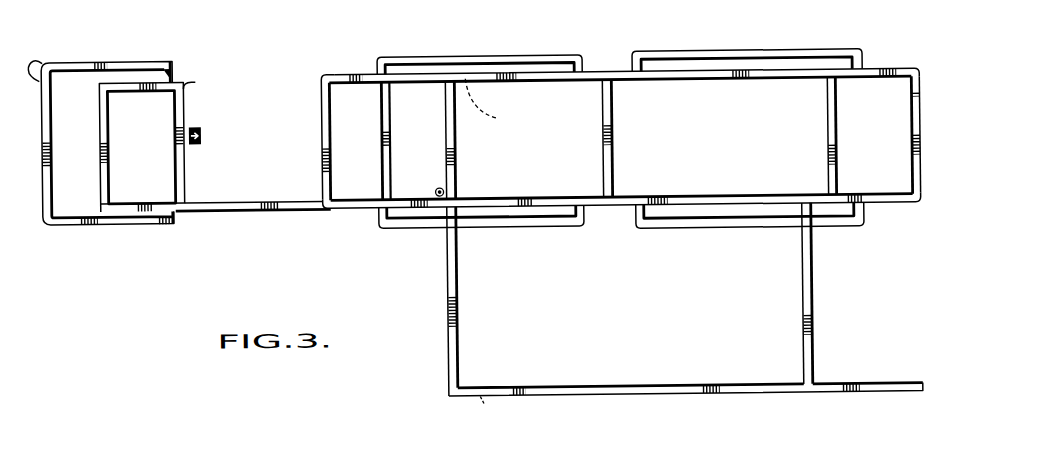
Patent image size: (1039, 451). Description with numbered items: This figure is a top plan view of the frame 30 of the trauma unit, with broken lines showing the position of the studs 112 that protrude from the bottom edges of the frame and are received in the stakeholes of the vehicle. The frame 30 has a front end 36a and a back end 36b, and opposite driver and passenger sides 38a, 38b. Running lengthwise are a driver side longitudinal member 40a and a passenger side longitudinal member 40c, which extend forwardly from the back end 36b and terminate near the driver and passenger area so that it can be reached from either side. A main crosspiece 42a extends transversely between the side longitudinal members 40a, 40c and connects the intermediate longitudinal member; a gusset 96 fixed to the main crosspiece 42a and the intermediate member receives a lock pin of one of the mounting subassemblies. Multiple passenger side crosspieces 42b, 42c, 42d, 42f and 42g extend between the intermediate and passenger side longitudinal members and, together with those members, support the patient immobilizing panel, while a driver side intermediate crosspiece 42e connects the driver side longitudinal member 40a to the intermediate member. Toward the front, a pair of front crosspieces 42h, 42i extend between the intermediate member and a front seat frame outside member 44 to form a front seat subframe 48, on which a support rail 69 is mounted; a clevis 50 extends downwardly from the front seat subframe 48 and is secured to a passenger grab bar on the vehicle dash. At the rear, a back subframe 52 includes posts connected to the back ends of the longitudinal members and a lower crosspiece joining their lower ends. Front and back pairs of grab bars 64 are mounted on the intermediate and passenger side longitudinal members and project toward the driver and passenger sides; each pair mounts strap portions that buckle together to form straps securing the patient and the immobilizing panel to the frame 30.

The frame 30 is at (439, 397).
The front end 36a is at (311, 219).
The back end 36b is at (928, 150).
The driver side 38a is at (437, 315).
The passenger side 38b is at (313, 97).
The driver side longitudinal member 40a is at (622, 386).
The passenger side longitudinal member 40c is at (605, 71).
The main crosspiece 42a is at (457, 159).
The passenger side crosspiece 42b is at (324, 152).
The passenger side crosspiece 42c is at (381, 158).
The passenger side crosspiece 42d is at (614, 171).
The driver side intermediate crosspiece 42e is at (801, 302).
The passenger side crosspiece 42f is at (829, 145).
The passenger side crosspiece 42g is at (910, 137).
The front crosspiece 42h is at (180, 171).
The front crosspiece 42i is at (100, 181).
The front seat frame outside member 44 is at (139, 86).
The front seat subframe 48 is at (196, 78).
The clevis 50 is at (203, 130).
The back subframe 52 is at (912, 103).
The grab bars 64 is at (511, 53).
The support rail 69 is at (40, 72).
The gusset 96 is at (435, 188).
The studs 112 is at (497, 118).